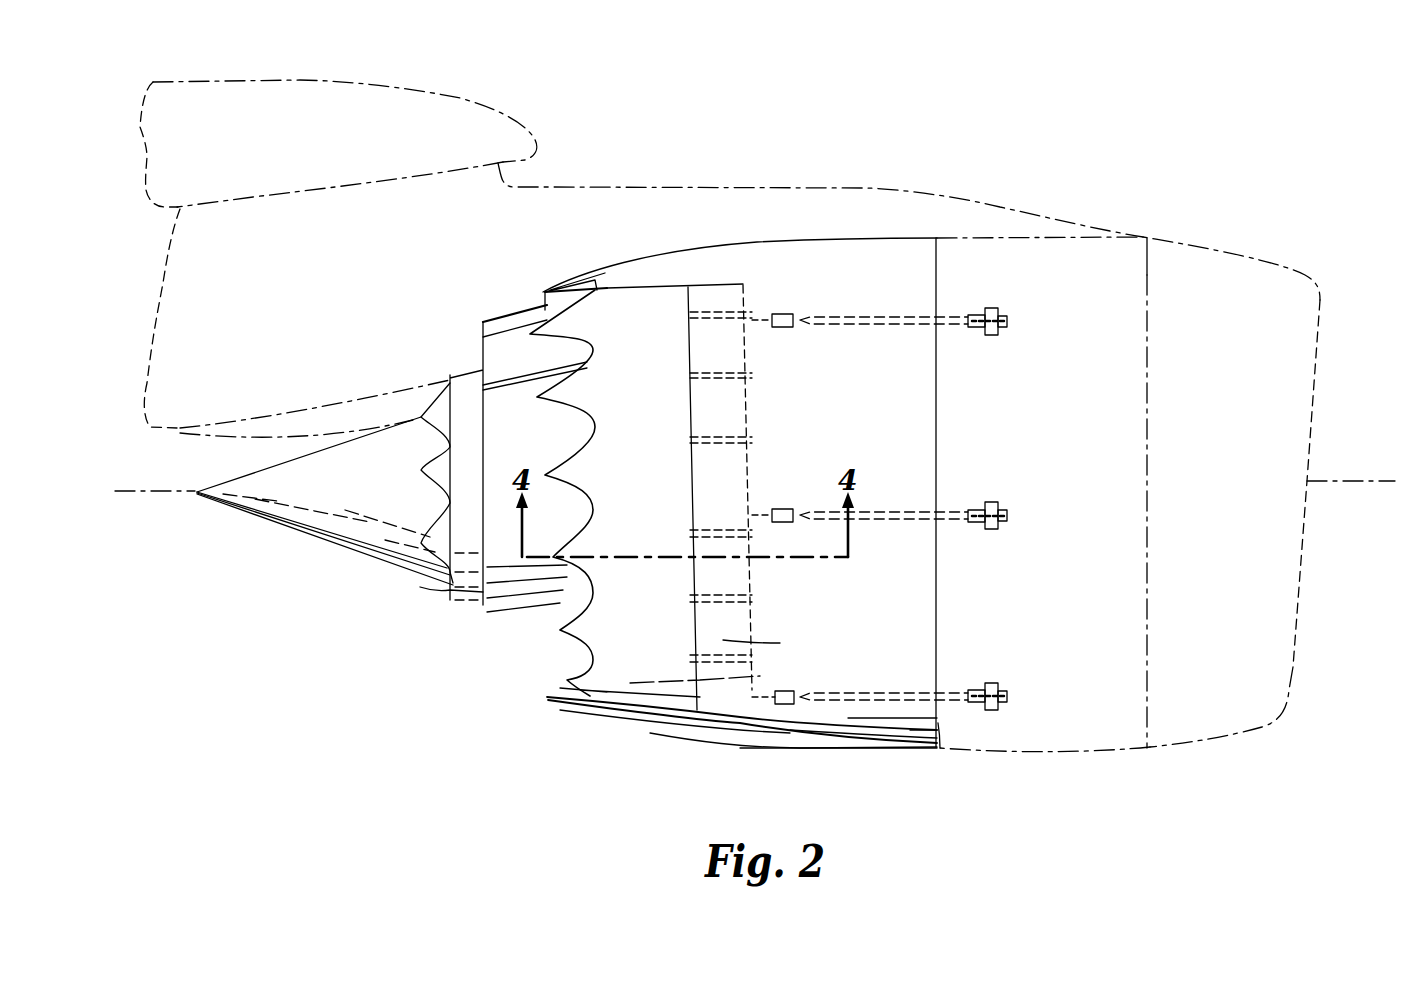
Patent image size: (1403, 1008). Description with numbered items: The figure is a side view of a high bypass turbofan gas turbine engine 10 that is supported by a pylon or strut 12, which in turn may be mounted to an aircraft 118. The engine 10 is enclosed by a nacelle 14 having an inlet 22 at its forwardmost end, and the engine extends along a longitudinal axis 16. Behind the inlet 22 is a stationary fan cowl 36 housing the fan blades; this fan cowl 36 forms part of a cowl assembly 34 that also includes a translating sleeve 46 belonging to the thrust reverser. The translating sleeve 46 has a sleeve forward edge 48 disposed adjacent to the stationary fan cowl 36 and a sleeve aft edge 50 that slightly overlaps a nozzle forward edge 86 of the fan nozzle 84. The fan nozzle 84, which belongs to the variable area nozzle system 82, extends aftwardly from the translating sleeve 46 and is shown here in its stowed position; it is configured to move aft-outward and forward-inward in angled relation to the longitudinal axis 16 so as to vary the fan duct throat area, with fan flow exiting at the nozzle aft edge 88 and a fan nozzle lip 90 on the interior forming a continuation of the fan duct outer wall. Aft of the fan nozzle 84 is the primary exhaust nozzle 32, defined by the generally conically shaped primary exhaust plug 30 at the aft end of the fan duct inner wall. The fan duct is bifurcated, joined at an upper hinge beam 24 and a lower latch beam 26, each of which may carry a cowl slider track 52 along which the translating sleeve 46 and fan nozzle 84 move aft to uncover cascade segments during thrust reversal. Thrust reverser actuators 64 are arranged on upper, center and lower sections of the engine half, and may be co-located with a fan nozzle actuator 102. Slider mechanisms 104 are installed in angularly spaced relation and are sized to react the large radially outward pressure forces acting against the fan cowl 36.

The gas turbine engine 10 is at (1144, 131).
The pylon or strut 12 is at (339, 256).
The nacelle 14 is at (1192, 242).
The longitudinal axis 16 is at (1325, 483).
The inlet 22 is at (1289, 692).
The hinge beam 24 is at (870, 238).
The latch beam 26 is at (897, 740).
The primary exhaust plug 30 is at (270, 518).
The primary exhaust nozzle 32 is at (420, 587).
The cowl assembly 34 is at (1146, 784).
The stationary fan cowl 36 is at (1090, 752).
The translating sleeve 46 is at (840, 745).
The sleeve forward edge 48 is at (940, 725).
The sleeve aft edge 50 is at (660, 688).
The cowl slider track 52 is at (690, 705).
The thrust reverser actuators 64 is at (893, 327).
The variable area nozzle system 82 is at (530, 670).
The fan nozzle 84 is at (617, 658).
The nozzle forward edge 86 is at (753, 638).
The nozzle aft edge 88 is at (527, 620).
The fan nozzle lip 90 is at (733, 650).
The fan nozzle actuator 102 is at (755, 515).
The slider mechanisms 104 is at (710, 382).
The aircraft 118 is at (605, 106).